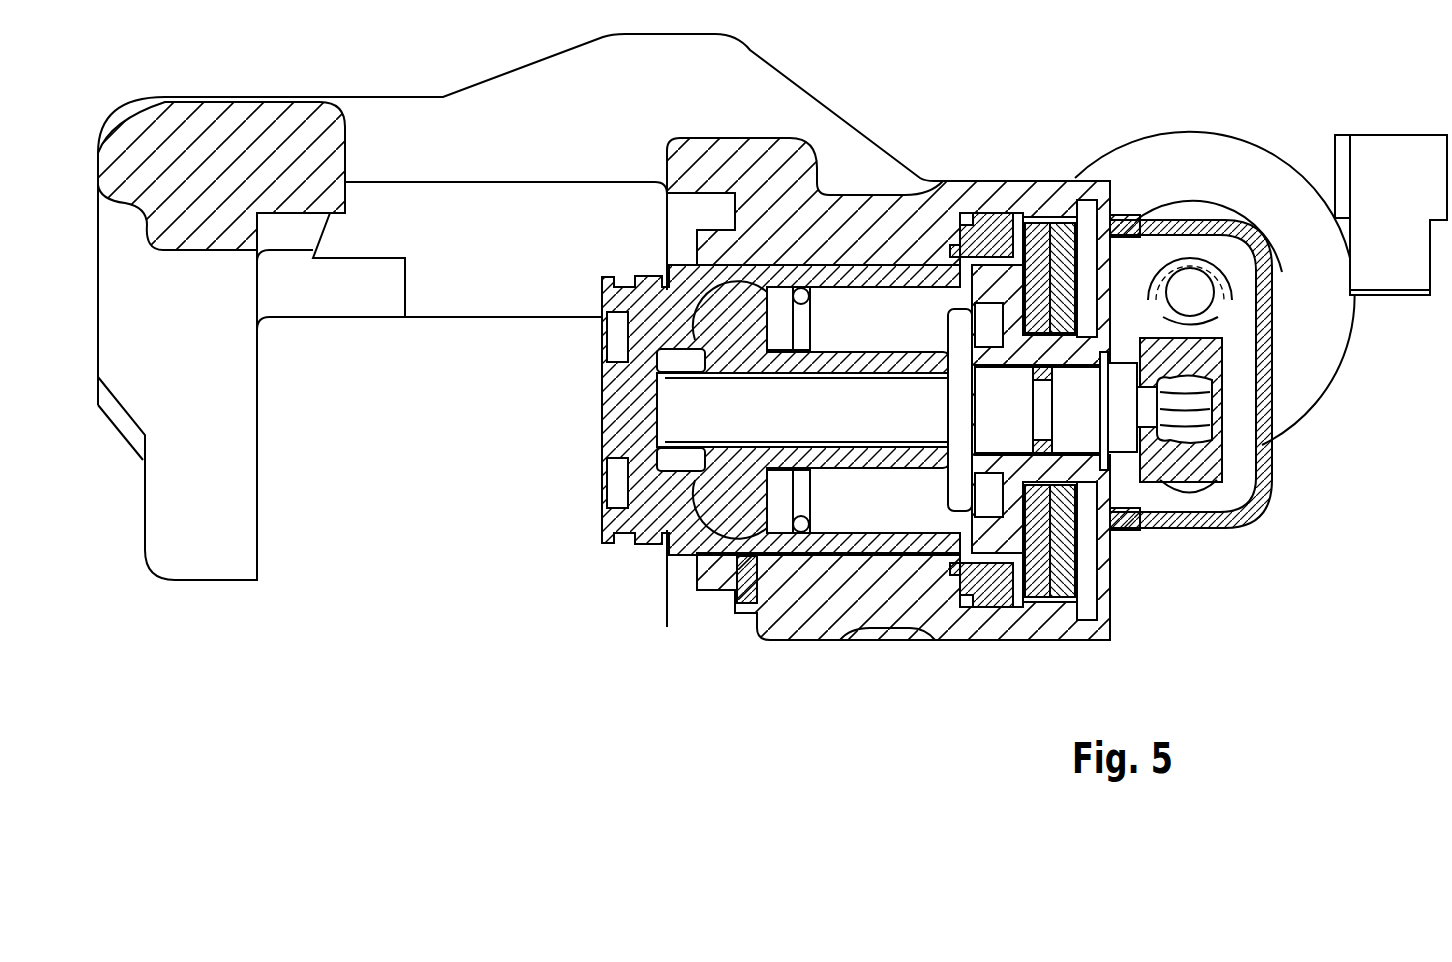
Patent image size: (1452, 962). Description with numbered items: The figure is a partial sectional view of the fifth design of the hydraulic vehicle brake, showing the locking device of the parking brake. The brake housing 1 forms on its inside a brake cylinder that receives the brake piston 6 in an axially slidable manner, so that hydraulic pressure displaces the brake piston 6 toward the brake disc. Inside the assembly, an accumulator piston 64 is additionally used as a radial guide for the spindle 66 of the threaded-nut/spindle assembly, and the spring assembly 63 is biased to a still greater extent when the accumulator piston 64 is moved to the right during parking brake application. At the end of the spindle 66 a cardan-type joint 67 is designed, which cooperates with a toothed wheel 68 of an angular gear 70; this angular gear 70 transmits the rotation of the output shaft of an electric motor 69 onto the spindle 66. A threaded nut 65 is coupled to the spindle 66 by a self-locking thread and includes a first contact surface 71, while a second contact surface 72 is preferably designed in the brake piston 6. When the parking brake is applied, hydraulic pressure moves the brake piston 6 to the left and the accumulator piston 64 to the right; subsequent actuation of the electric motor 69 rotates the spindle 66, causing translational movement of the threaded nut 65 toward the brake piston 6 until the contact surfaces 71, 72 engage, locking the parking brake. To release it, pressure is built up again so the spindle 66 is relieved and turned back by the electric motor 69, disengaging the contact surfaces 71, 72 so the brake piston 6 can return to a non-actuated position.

The brake housing 1 is at (832, 224).
The brake piston 6 is at (695, 535).
The spring assembly 63 is at (1035, 592).
The accumulator piston 64 is at (1015, 268).
The threaded nut 65 is at (758, 478).
The spindle 66 is at (680, 400).
The cardan-type joint 67 is at (1212, 412).
The toothed wheel 68 is at (1187, 467).
The electric motor 69 is at (1266, 142).
The angular gear 70 is at (1230, 320).
The first contact surface 71 is at (727, 490).
The second contact surface 72 is at (690, 318).